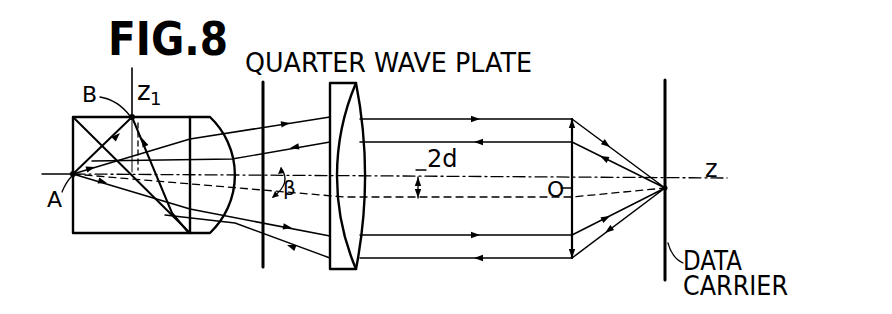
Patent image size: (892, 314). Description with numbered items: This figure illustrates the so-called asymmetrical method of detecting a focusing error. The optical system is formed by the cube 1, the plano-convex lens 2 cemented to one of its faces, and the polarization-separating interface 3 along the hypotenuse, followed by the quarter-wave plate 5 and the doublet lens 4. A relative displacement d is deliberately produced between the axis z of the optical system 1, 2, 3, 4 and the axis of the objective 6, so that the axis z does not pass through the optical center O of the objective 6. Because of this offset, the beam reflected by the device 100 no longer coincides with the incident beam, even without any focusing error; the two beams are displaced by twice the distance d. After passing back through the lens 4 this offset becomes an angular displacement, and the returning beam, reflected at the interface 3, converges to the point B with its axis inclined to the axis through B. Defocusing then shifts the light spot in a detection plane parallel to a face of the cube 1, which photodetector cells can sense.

The parallelepiped 1 is at (118, 221).
The plano-convex lens 2 is at (205, 226).
The interface 3 is at (185, 226).
The lens 4 is at (329, 100).
The quarter-wave plate 5 is at (262, 106).
The objective 6 is at (571, 226).
The device 100 is at (668, 122).